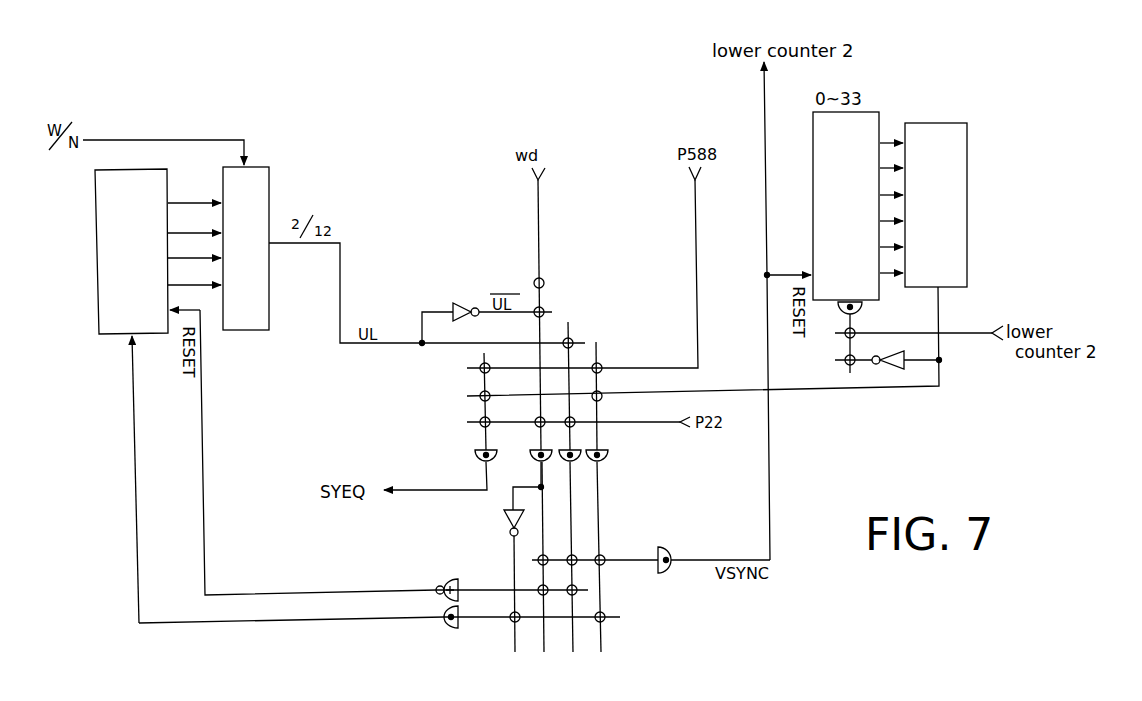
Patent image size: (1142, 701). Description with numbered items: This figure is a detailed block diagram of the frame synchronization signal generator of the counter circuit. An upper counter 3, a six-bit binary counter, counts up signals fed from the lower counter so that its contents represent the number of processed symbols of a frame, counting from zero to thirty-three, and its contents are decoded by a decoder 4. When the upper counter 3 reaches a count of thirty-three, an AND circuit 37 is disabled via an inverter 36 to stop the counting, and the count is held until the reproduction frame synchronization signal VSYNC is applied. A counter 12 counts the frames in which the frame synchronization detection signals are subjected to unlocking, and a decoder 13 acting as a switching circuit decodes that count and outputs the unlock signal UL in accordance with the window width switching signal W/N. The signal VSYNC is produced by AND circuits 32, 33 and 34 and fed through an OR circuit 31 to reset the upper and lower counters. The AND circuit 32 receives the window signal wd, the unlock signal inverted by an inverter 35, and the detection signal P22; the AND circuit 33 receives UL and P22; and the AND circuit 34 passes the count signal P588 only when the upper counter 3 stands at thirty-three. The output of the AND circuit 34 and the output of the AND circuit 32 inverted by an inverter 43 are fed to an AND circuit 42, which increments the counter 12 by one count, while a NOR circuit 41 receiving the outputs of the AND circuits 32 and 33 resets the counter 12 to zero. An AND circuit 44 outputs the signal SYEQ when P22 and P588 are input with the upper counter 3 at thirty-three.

The upper counter 3 is at (880, 127).
The decoder 4 is at (967, 147).
The counter 12 is at (95, 258).
The decoder 13 is at (269, 189).
The OR circuit 31 is at (675, 546).
The AND circuit 32 is at (532, 452).
The AND circuit 33 is at (578, 459).
The AND circuit 34 is at (608, 452).
The inverter 35 is at (454, 305).
The inverter 36 is at (902, 372).
The AND circuit 37 is at (865, 311).
The NOR circuit 41 is at (446, 581).
The AND circuit 42 is at (447, 630).
The inverter 43 is at (503, 521).
The AND circuit 44 is at (475, 453).